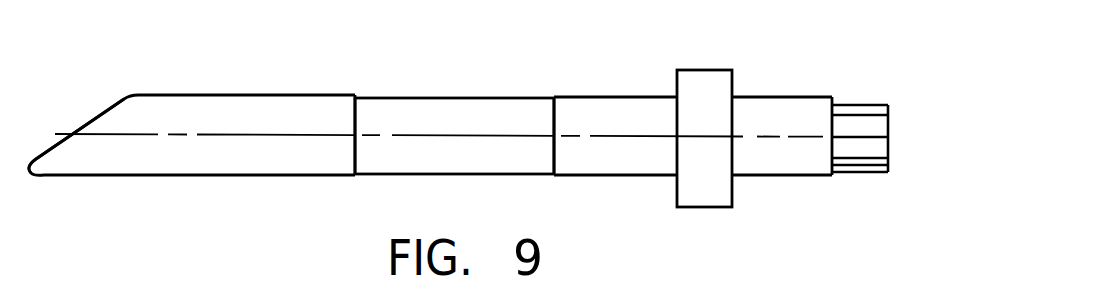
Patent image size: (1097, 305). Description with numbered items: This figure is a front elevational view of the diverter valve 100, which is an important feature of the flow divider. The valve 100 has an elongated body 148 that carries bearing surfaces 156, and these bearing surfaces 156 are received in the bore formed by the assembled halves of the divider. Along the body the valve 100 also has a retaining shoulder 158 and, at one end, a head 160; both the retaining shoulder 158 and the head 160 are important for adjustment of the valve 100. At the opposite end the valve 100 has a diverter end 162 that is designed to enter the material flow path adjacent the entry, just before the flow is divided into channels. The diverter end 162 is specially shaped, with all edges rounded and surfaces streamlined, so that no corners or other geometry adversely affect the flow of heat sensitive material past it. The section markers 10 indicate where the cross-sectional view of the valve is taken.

The section line 10- 10 is at (70, 65).
The diverter valve 100 is at (538, 77).
The elongated body 148 is at (390, 112).
The bearing surfaces 156 is at (243, 157).
The retaining shoulder 158 is at (705, 82).
The head 160 is at (863, 125).
The diverter end 162 is at (55, 155).